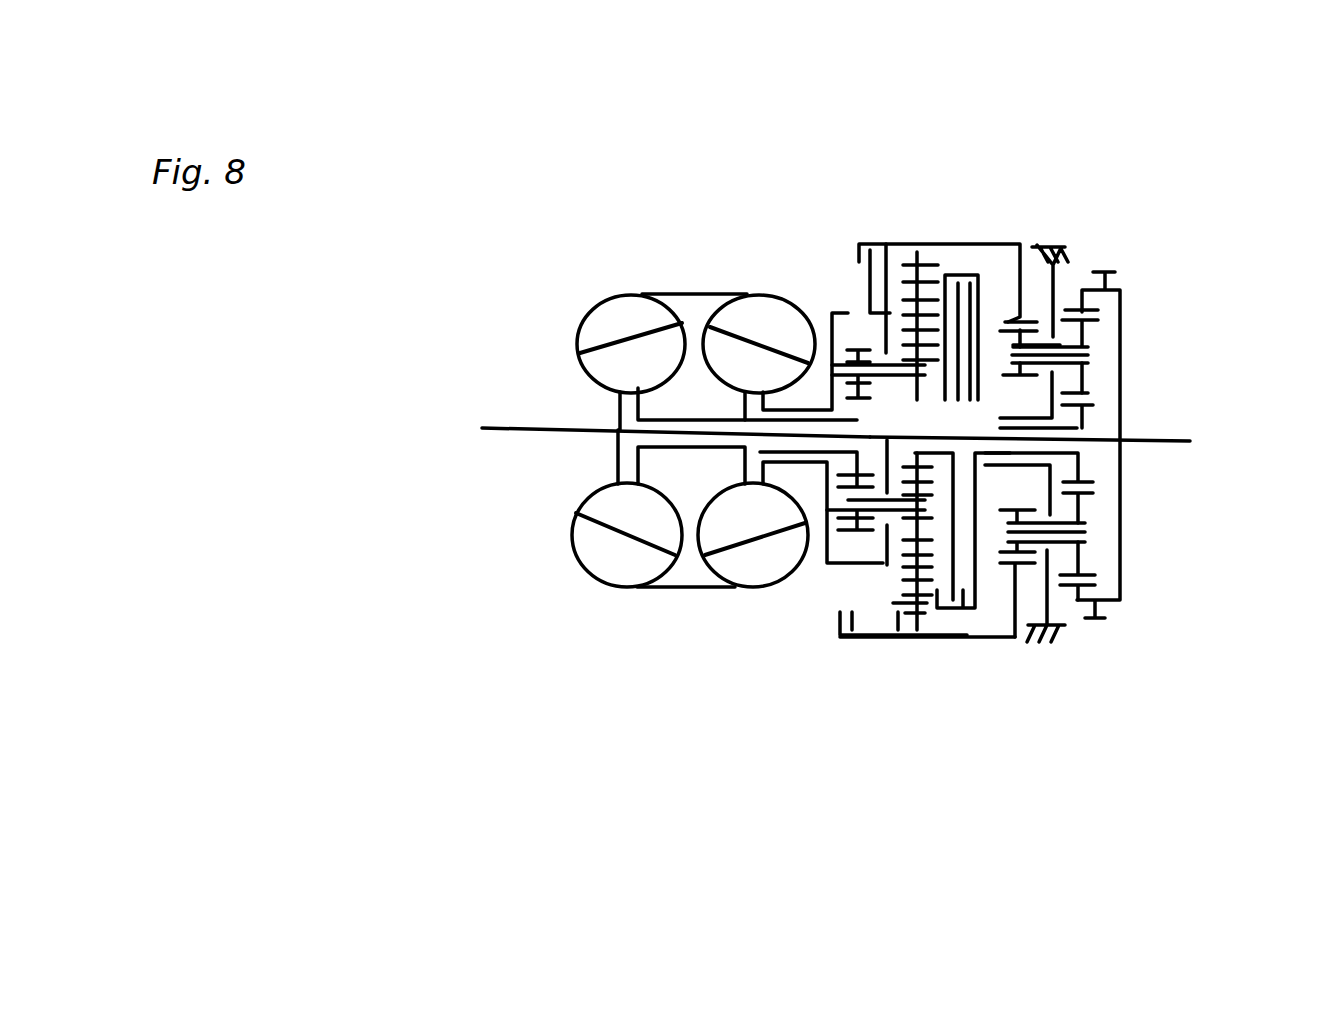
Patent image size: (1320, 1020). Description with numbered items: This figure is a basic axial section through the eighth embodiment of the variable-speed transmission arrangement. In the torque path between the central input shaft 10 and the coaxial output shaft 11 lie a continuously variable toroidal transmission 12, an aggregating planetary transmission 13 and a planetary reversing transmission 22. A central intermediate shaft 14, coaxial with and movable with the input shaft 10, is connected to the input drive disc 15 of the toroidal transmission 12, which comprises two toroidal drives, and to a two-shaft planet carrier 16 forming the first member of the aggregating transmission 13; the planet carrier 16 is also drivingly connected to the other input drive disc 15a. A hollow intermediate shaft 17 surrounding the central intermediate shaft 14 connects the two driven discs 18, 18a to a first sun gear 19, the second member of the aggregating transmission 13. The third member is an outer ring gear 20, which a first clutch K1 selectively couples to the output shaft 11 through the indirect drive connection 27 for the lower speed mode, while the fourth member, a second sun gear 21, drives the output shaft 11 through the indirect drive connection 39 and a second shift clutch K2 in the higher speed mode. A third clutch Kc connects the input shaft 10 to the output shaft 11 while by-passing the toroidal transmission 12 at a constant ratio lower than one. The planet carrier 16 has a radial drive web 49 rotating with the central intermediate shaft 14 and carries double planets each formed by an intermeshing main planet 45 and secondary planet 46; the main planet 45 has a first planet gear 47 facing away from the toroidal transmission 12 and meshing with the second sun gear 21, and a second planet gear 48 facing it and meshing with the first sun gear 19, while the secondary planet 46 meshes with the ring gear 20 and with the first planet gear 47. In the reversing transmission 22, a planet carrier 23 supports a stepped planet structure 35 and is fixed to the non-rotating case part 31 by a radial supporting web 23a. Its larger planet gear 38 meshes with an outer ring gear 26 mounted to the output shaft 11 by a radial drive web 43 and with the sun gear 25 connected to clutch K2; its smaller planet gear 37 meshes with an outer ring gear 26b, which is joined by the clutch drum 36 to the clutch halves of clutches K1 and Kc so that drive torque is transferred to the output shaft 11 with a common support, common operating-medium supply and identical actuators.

The input shaft 10 is at (497, 441).
The output shaft 11 is at (1185, 448).
The continuously variable toroidal transmission 12 is at (683, 177).
The aggregating planetary transmission 13 is at (913, 172).
The central intermediate shaft 14 is at (632, 380).
The input drive disc 15 is at (620, 292).
The other input drive disc 15a is at (758, 590).
The two-shaft planet carrier 16 is at (903, 288).
The hollow intermediate shaft 17 is at (693, 447).
The driven disc 18 is at (640, 290).
The driven disc 18a is at (700, 295).
The first sun gear 19 is at (832, 397).
The outer ring gear 20 is at (940, 267).
The second sun gear 21 is at (975, 335).
The planetary reversing transmission 22 is at (1092, 178).
The planet carrier 23 is at (1068, 279).
The radial supporting web 23a is at (1050, 603).
The sun gear 25 is at (1097, 482).
The outer ring gear 26 is at (1098, 310).
The outer ring gear 26b is at (1028, 565).
The indirect drive connection 27 is at (949, 654).
The non-rotating case part 31 is at (1057, 262).
The stepped planet structure 35 is at (1103, 376).
The clutch drum 36 is at (870, 638).
The planet gear 37 is at (1005, 330).
The planet gear 38 is at (1098, 403).
The indirect drive connection 39 is at (989, 475).
The radial drive web 43 is at (1117, 578).
The main planet 45 is at (828, 531).
The secondary planet 46 is at (882, 612).
The first planet gear 47 is at (858, 322).
The second planet gear 48 is at (848, 313).
The radial drive web 49 is at (883, 543).
The third clutch Kc is at (846, 663).
The first clutch K1 is at (918, 662).
The second shift clutch K2 is at (973, 650).